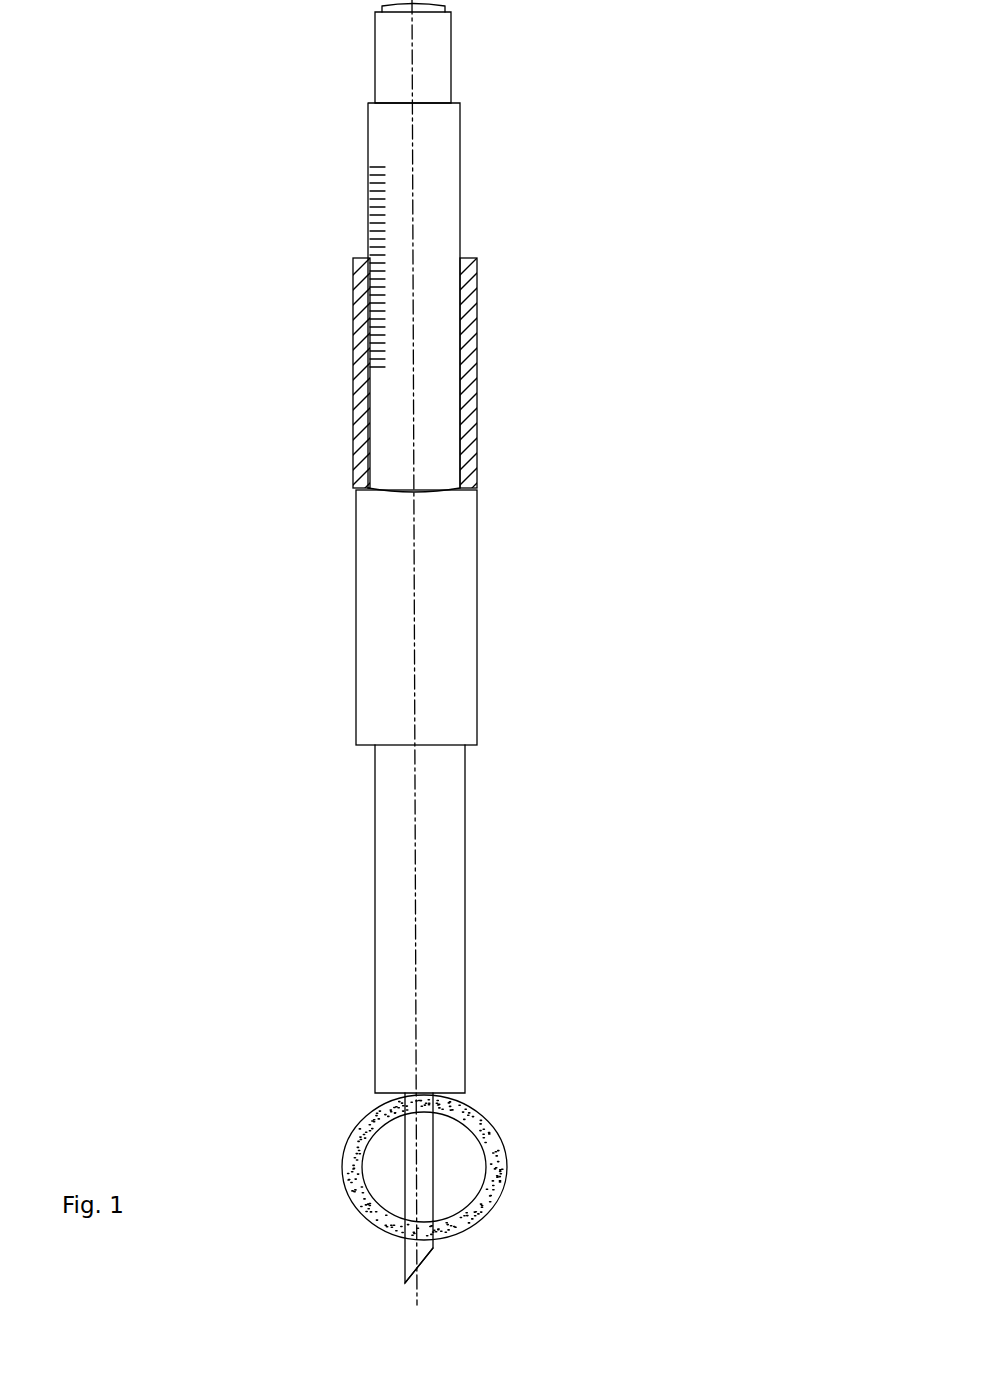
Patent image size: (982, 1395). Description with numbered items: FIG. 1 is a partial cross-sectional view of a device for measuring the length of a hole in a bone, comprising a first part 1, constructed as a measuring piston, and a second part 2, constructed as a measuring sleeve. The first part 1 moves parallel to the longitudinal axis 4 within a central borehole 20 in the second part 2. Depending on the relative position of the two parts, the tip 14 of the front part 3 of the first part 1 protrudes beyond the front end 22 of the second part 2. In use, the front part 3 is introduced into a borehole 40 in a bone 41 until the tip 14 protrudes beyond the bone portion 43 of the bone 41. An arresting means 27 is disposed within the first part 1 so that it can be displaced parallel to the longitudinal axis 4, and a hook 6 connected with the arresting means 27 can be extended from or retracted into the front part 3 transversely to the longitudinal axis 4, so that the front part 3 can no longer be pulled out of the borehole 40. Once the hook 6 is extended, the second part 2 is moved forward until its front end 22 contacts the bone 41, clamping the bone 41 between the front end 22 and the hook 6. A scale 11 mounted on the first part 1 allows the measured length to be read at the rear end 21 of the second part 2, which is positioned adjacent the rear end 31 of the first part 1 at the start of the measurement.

The first part 1 is at (441, 408).
The arresting means 27 is at (473, 46).
The rear end of the first part 31 is at (450, 115).
The scale 11 is at (372, 228).
The rear end of the second part 21 is at (470, 270).
The central borehole 20 is at (503, 401).
The second part 2 is at (463, 728).
The front end of the second part 22 is at (387, 1083).
The longitudinal axis 4 is at (417, 987).
The bone 41 is at (502, 1148).
The borehole in the bone 40 is at (440, 1100).
The bone portion 43 is at (358, 1226).
The hook 6 is at (446, 1244).
The front part 3 is at (413, 1200).
The tip 14 is at (405, 1262).